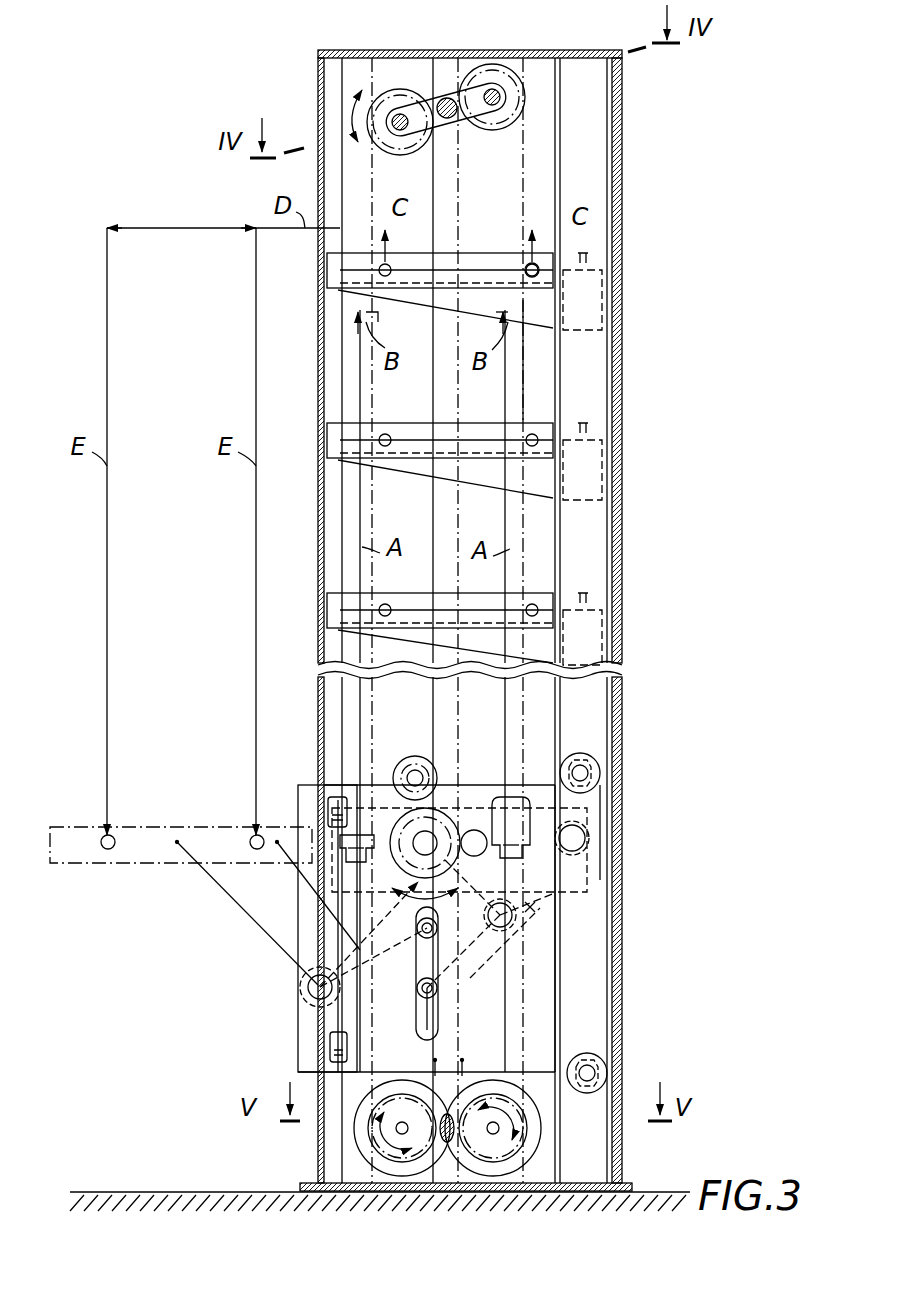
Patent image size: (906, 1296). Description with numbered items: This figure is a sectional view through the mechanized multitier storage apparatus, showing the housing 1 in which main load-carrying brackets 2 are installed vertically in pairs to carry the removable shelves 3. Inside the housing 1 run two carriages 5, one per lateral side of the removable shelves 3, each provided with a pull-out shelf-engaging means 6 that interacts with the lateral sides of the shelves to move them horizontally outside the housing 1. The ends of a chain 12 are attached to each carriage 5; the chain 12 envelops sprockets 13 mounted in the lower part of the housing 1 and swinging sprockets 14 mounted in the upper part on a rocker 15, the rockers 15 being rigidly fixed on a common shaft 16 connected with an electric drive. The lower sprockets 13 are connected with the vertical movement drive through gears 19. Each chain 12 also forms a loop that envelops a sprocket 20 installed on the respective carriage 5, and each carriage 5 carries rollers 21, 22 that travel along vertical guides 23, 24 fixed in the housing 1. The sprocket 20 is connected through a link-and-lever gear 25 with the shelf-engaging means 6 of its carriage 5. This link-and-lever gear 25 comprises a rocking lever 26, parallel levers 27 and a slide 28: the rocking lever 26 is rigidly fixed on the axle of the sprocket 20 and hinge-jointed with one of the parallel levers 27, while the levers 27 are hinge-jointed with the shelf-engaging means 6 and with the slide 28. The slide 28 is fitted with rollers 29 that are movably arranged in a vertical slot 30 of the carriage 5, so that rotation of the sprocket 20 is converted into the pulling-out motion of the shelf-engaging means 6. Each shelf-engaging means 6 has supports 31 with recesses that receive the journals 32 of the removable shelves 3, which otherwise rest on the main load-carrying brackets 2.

The housing 1 is at (622, 186).
The main load-carrying brackets 2 is at (480, 466).
The removable shelves 3 is at (480, 256).
The carriages 5 is at (535, 1016).
The pull-out shelf-engaging means 6 is at (512, 830).
The chain 12 is at (524, 386).
The sprockets 13 is at (372, 1125).
The swinging sprockets 14 is at (394, 104).
The rocker 15 is at (446, 98).
The common shaft 16 is at (460, 130).
The gears 19 is at (413, 1087).
The sprocket 20 is at (436, 816).
The rollers 21 is at (600, 768).
The rollers 22 is at (333, 800).
The vertical guides 23 is at (585, 548).
The vertical guides 24 is at (336, 539).
The link-and-lever gear 25 is at (473, 976).
The rocking lever 26 is at (493, 898).
The parallel levers 27 is at (533, 910).
The slide 28 is at (423, 963).
The rollers 29 is at (440, 929).
The vertical slot 30 is at (428, 1031).
The supports 31 is at (530, 846).
The journals 32 is at (545, 270).